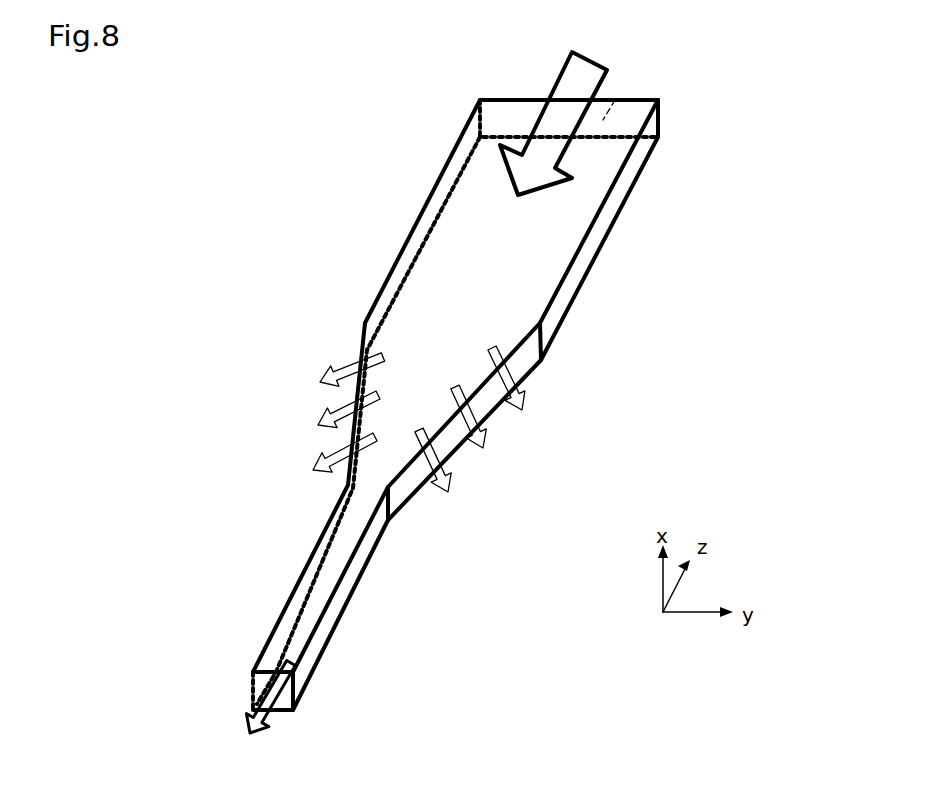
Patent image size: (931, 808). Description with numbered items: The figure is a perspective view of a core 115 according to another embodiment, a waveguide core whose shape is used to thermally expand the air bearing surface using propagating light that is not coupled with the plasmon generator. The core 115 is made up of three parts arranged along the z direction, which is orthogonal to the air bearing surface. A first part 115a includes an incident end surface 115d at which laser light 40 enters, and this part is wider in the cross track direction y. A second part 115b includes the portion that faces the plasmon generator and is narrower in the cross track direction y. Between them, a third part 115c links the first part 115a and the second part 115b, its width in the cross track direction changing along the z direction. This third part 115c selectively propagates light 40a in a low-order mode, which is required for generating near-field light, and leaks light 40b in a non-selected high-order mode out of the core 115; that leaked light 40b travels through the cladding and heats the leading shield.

The core 115 is at (326, 261).
The first part 115a is at (558, 250).
The second part 115b is at (332, 613).
The third part 115c is at (517, 367).
The incident end surface 115d is at (613, 98).
The laser light 40 is at (598, 71).
The light in a low-order mode 40a is at (300, 687).
The light in a high-order mode 40b is at (457, 467).